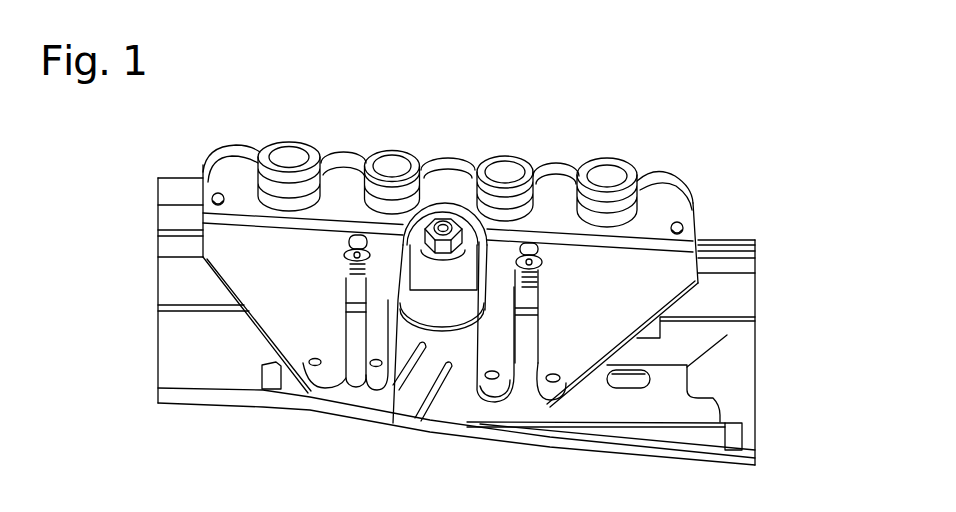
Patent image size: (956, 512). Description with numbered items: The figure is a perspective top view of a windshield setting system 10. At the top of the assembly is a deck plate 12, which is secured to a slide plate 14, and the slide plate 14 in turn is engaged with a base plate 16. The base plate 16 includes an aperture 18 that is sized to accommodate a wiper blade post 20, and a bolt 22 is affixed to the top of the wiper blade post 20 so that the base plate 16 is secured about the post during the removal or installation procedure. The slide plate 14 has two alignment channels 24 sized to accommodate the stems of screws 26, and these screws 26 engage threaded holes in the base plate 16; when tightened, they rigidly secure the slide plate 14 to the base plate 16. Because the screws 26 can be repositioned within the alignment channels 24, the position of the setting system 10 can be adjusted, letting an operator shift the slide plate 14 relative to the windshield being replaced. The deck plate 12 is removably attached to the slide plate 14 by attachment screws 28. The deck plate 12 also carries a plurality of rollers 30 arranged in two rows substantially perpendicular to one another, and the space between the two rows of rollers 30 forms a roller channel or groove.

The windshield setting system 10 is at (147, 212).
The deck plate 12 is at (692, 207).
The slide plate 14 is at (647, 285).
The base plate 16 is at (467, 300).
The aperture 18 is at (438, 262).
The wiper blade post 20 is at (442, 320).
The bolt 22 is at (446, 220).
The alignment channels 24 is at (350, 341).
The screws 26 is at (348, 257).
The attachment screws 28 is at (216, 192).
The rollers 30 is at (519, 157).